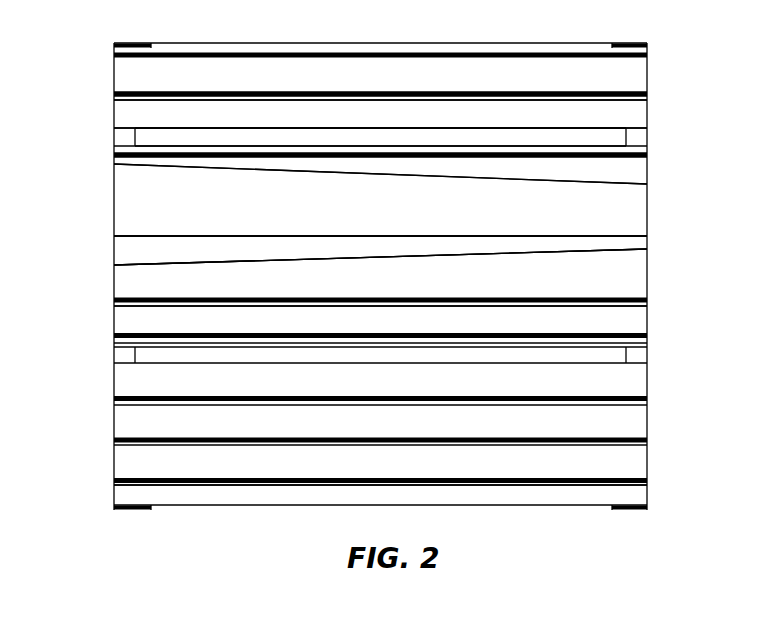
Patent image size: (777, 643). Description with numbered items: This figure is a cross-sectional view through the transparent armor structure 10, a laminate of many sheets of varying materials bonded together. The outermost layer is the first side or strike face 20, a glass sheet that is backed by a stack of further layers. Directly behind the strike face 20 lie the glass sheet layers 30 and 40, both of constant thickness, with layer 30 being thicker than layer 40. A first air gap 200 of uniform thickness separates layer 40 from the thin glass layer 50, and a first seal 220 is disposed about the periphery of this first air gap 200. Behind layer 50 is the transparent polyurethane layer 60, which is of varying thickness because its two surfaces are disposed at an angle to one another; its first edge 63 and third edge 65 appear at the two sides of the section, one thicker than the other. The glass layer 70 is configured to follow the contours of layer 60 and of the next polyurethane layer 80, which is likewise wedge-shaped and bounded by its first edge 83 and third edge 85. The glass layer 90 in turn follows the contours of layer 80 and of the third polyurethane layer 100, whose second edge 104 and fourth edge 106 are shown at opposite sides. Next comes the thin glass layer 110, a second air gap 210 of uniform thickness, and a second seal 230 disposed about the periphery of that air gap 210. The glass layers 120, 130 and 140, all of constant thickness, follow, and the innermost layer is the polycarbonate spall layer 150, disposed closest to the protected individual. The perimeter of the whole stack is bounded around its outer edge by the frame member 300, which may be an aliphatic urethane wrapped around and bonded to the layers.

The transparent armor structure 10 is at (350, 43).
The strike face 20 is at (413, 47).
The glass sheet layer 30 is at (396, 84).
The glass sheet layer 40 is at (396, 120).
The glass sheet layer 50 is at (308, 147).
The first air gap 200 is at (478, 140).
The frame member 300 is at (648, 113).
The first seal 220 is at (635, 138).
The first edge 63 is at (648, 173).
The third edge 65 is at (113, 162).
The polyurethane layer 60 is at (507, 177).
The glass sheet layer 70 is at (394, 215).
The polyurethane layer 80 is at (327, 246).
The first edge 83 is at (648, 243).
The third edge 85 is at (113, 252).
The glass sheet layer 90 is at (394, 289).
The polyurethane layer 100 is at (400, 330).
The second edge 104 is at (113, 320).
The fourth edge 106 is at (648, 318).
The glass sheet layer 110 is at (113, 342).
The second air gap 210 is at (432, 355).
The second seal 230 is at (635, 355).
The glass sheet layer 120 is at (400, 390).
The glass sheet layer 130 is at (400, 430).
The glass sheet layer 140 is at (400, 470).
The spall layer 150 is at (430, 495).